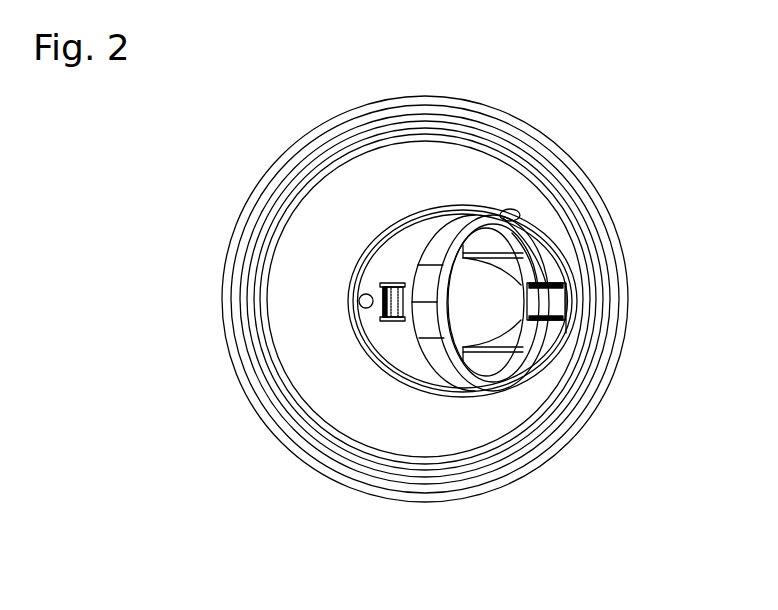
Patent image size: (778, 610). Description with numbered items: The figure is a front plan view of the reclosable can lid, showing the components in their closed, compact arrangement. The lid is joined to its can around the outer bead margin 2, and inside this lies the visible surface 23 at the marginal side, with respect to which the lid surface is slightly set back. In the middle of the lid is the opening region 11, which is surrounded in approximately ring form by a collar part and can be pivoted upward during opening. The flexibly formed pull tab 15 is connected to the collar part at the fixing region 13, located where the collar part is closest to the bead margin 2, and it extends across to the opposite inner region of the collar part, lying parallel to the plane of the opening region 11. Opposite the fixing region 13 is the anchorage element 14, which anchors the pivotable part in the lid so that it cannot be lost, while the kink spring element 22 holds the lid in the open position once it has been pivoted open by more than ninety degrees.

The bead margin 2 is at (608, 275).
The opening region 11 is at (482, 308).
The fixing region 13 is at (552, 302).
The anchorage element 14 is at (362, 299).
The pull tab 15 is at (518, 236).
The kink spring element 22 is at (382, 320).
The visible surface 23 is at (440, 433).